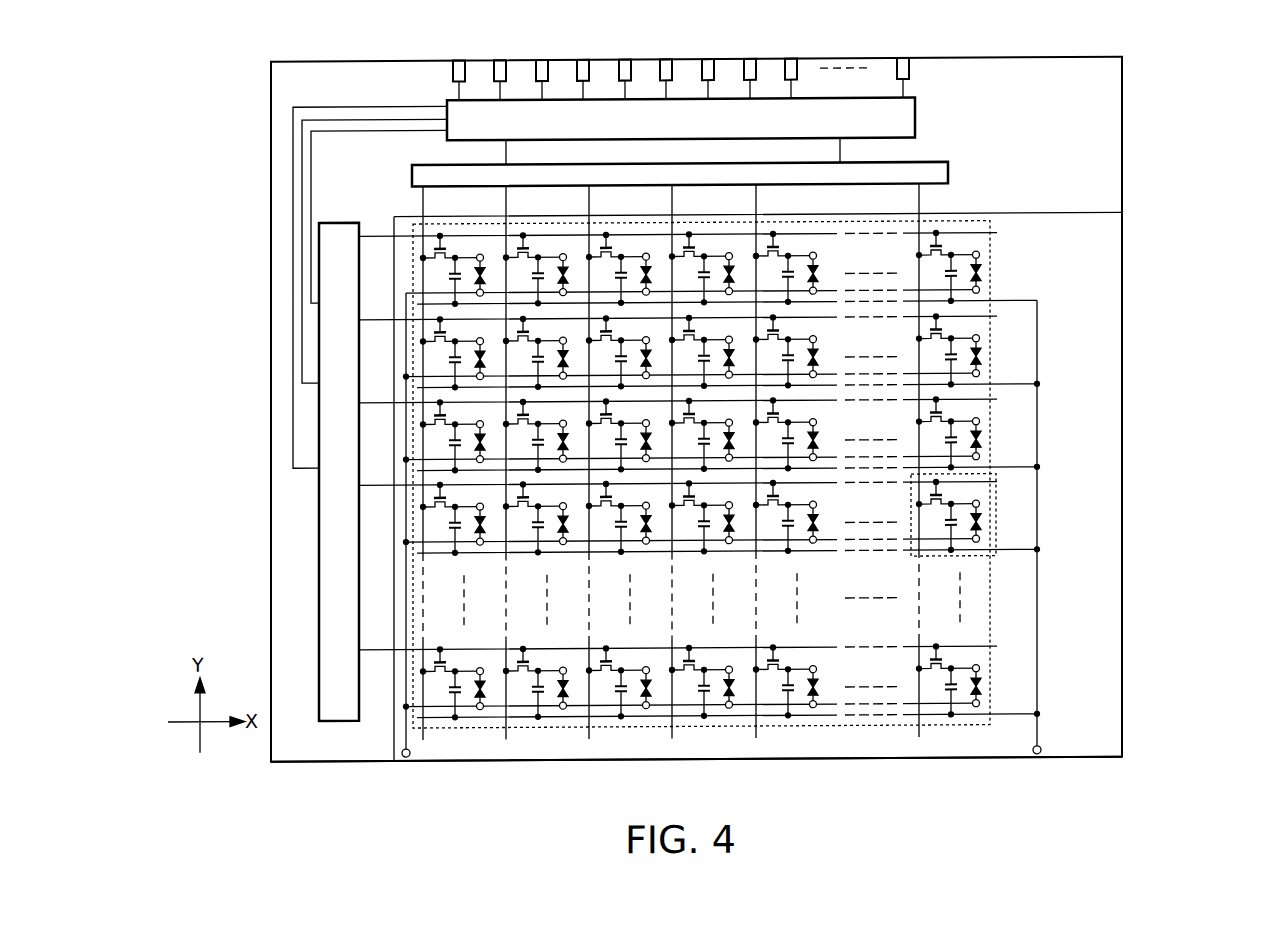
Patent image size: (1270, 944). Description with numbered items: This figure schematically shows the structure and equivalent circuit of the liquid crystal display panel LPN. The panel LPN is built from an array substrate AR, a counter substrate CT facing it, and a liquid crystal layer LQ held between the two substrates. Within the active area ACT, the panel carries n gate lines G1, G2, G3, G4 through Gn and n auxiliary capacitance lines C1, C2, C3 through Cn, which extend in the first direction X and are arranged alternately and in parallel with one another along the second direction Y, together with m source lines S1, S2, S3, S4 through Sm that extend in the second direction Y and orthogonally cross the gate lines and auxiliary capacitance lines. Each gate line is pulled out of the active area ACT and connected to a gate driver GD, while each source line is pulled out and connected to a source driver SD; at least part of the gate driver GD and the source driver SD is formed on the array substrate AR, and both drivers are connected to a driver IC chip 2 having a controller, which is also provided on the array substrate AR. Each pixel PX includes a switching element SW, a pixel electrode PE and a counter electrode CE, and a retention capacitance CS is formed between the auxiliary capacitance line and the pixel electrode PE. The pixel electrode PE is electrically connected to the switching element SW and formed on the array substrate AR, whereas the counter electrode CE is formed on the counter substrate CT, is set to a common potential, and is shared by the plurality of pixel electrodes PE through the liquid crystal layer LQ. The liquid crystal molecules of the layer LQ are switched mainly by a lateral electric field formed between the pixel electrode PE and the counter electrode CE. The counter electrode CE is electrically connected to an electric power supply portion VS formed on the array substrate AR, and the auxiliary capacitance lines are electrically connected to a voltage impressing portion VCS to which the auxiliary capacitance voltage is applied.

The liquid crystal display panel LPN is at (1152, 75).
The driver IC chip 2 is at (917, 122).
The source driver SD is at (950, 177).
The gate driver GD is at (319, 585).
The counter substrate CT is at (1035, 219).
The active area ACT is at (993, 336).
The source line S1 is at (427, 208).
The source line S2 is at (510, 208).
The source line S3 is at (593, 208).
The source line S4 is at (676, 208).
The source line Sm is at (922, 210).
The gate line G1 is at (375, 236).
The gate line G2 is at (375, 320).
The gate line G3 is at (375, 403).
The gate line G4 is at (375, 486).
The gate line Gn is at (374, 650).
The auxiliary capacitance line C1 is at (1012, 306).
The auxiliary capacitance line C2 is at (1012, 389).
The auxiliary capacitance line C3 is at (1012, 472).
The auxiliary capacitance line Cn is at (1012, 719).
The voltage impressing portion VCS is at (1041, 754).
The electric power supply portion VS is at (410, 760).
The array substrate AR is at (336, 759).
The pixel PX is at (990, 562).
The switching element SW is at (922, 496).
The retention capacitance CS is at (937, 528).
The pixel electrode PE is at (979, 508).
The liquid crystal layer LQ is at (983, 521).
The counter electrode CE is at (979, 545).